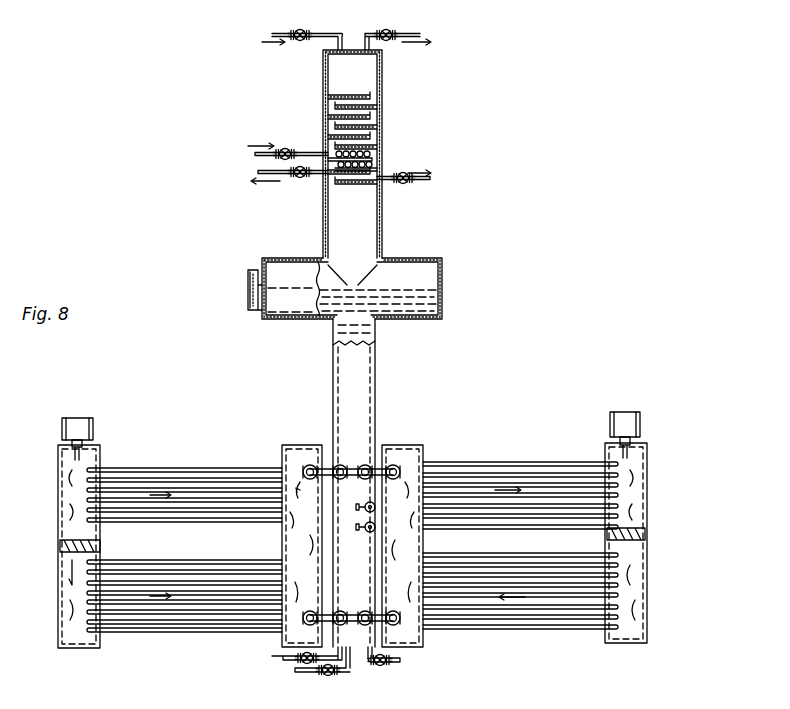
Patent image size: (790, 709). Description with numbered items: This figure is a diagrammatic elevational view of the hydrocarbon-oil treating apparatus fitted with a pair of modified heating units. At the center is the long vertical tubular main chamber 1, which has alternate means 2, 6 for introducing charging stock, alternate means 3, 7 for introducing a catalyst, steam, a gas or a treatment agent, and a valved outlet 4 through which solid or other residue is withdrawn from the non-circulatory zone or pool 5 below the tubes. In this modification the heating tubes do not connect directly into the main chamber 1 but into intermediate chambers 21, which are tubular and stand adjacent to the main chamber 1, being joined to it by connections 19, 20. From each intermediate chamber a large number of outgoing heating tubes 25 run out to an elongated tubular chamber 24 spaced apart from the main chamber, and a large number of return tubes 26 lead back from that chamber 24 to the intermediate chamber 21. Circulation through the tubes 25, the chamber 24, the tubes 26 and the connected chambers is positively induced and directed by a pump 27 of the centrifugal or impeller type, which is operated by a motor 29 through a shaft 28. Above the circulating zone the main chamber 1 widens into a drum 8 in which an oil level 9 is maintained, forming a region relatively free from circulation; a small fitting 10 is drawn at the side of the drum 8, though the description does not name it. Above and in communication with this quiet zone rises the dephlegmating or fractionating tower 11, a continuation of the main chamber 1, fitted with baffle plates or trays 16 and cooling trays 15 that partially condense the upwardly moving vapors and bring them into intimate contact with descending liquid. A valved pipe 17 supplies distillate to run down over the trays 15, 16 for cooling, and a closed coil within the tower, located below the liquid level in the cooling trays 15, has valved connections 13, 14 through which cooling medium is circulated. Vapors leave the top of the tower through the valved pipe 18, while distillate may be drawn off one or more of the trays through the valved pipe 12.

The main chamber 1 is at (375, 382).
The means for introduction of charging stock 2 is at (298, 664).
The means for introduction of catalyst, steam, gas or treatment agent 3 is at (328, 676).
The valved outlet 4 is at (380, 666).
The non-circulatory zone or pool 5 is at (385, 650).
The means for introduction of charging stock 6 is at (362, 506).
The means for introduction of catalyst, steam, gas or treatment agent 7 is at (364, 532).
The drum 8 is at (420, 258).
The oil level 9 is at (430, 274).
The gauge 10 is at (248, 285).
The dephlegmating or fractionating tower 11 is at (382, 228).
The valved pipe 12 is at (408, 184).
The valved connection 13 is at (285, 149).
The valved connection 14 is at (300, 179).
The cooling trays 15 is at (380, 161).
The baffle plates or trays 16 is at (381, 104).
The valved pipe 17 is at (303, 34).
The valved pipe 18 is at (386, 32).
The connection 19 is at (378, 470).
The connection 20 is at (352, 612).
The intermediate chambers 21 is at (292, 447).
The elongated tubular chamber 24 is at (100, 453).
The outgoing heating tubes 25 is at (184, 470).
The return tubes 26 is at (158, 632).
The pump 27 is at (62, 545).
The shaft 28 is at (70, 443).
The motor 29 is at (90, 420).